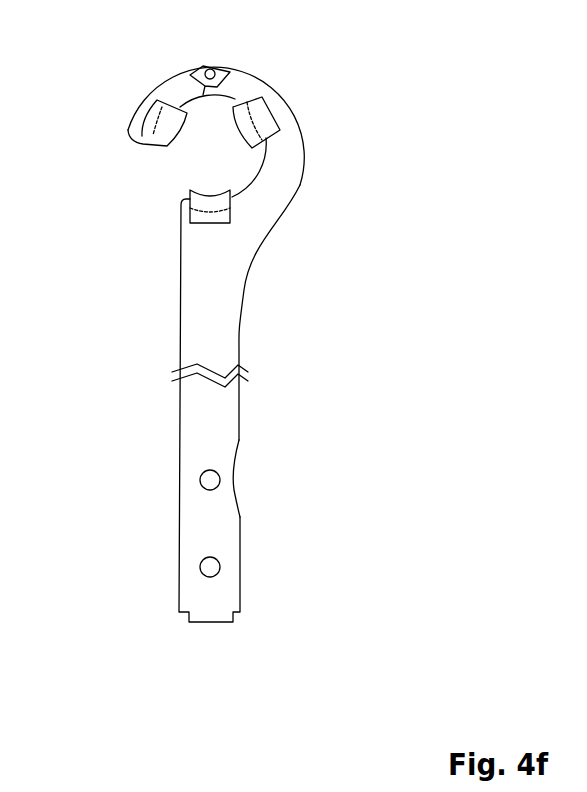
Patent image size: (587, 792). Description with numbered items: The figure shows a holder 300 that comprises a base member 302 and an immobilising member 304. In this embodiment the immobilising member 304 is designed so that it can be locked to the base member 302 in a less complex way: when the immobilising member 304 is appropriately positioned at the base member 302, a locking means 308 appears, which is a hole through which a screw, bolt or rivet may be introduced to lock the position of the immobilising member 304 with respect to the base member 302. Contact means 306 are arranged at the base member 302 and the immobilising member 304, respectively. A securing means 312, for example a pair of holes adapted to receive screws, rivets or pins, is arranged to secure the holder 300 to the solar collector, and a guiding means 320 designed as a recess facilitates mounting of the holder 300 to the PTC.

The holder 300 is at (450, 77).
The base member 302 is at (227, 287).
The immobilising member 304 is at (162, 70).
The contact means 306 is at (158, 128).
The locking means 308 is at (211, 72).
The securing means 312 is at (207, 480).
The guiding means 320 is at (263, 483).